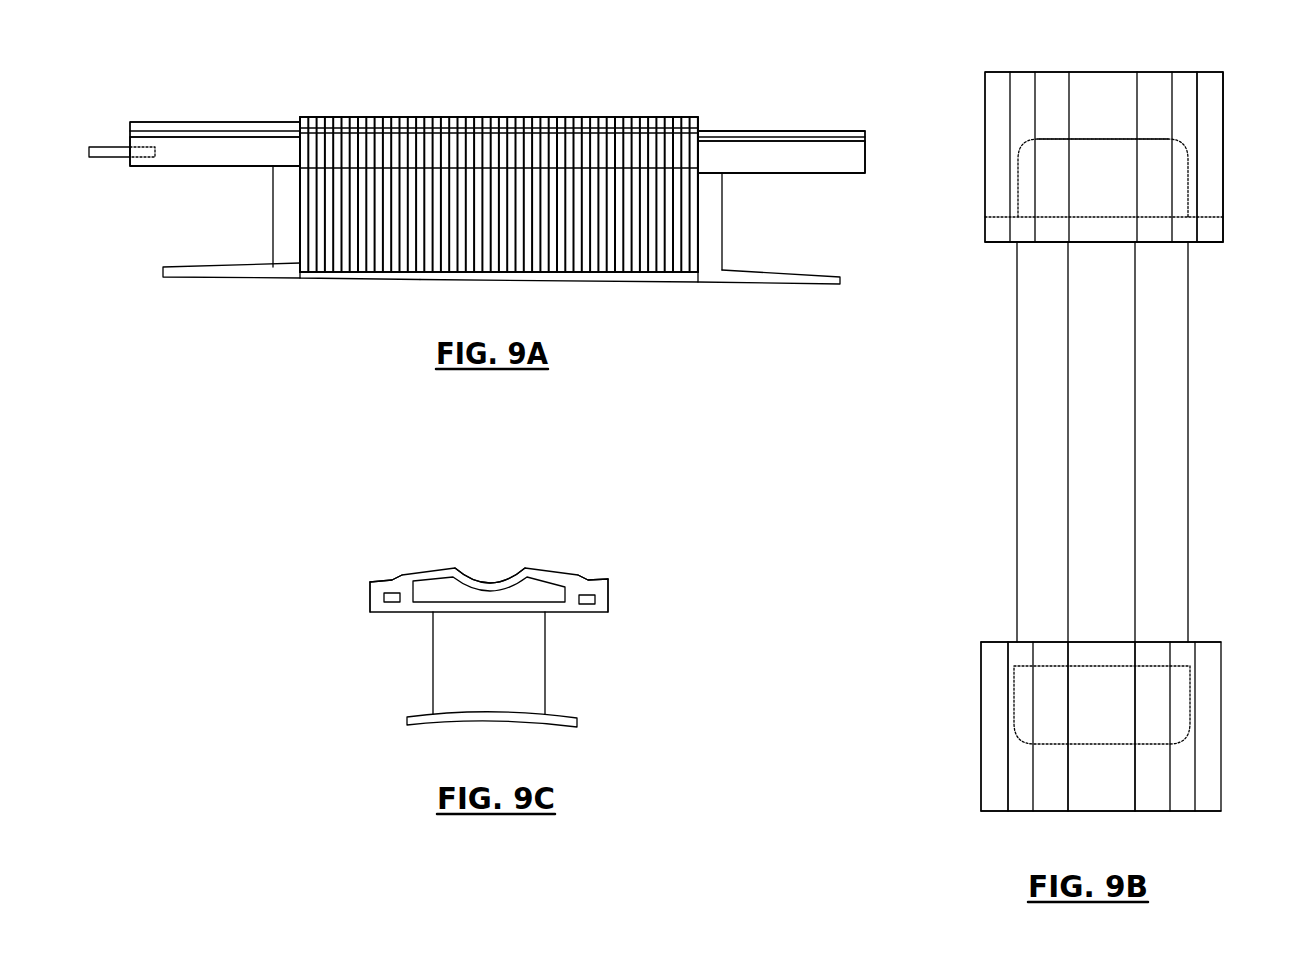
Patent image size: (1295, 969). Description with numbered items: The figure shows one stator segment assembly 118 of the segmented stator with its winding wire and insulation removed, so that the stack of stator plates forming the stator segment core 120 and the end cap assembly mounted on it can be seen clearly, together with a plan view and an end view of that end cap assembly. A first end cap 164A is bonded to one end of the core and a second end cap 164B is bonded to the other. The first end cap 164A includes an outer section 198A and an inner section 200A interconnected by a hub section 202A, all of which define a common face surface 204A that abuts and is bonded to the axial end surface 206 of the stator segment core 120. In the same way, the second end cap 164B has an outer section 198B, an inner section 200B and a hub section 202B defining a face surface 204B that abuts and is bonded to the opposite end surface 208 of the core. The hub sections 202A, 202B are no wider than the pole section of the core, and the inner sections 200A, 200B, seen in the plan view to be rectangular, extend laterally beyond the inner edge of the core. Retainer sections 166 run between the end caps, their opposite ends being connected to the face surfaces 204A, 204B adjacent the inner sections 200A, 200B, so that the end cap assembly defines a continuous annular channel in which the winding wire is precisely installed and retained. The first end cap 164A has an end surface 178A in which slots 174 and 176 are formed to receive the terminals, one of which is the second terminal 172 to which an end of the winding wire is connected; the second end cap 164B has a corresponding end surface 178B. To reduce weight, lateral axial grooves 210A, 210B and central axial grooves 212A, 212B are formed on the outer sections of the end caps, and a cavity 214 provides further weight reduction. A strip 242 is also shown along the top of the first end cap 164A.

In FIG. 9A, the stator segment assembly 118 is at (627, 84).
In FIG. 9A, the stator segment core 120 is at (494, 99).
In FIG. 9A, the first end cap 164A is at (183, 120).
In FIG. 9C, the first end cap 164A is at (577, 526).
In FIG. 9B, the first end cap 164A is at (967, 100).
In FIG. 9A, the second end cap 164B is at (818, 131).
In FIG. 9B, the second end cap 164B is at (951, 770).
In FIG. 9A, the retainer sections 166 is at (432, 272).
In FIG. 9B, the retainer sections 166 is at (1053, 359).
In FIG. 9A, the second terminal 172 is at (105, 158).
In FIG. 9C, the slot 174 is at (390, 603).
In FIG. 9C, the slot 176 is at (590, 607).
In FIG. 9A, the end surface 178A is at (130, 140).
In FIG. 9C, the end surface 178A is at (378, 585).
In FIG. 9B, the end surface 178A is at (1002, 72).
In FIG. 9A, the end surface 178B is at (866, 157).
In FIG. 9B, the end surface 178B is at (1148, 812).
In FIG. 9A, the outer section 198A is at (207, 157).
In FIG. 9C, the outer section 198A is at (597, 588).
In FIG. 9B, the outer section 198A is at (1205, 118).
In FIG. 9A, the outer section 198B is at (836, 166).
In FIG. 9B, the outer section 198B is at (997, 736).
In FIG. 9A, the inner section 200A is at (220, 273).
In FIG. 9C, the inner section 200A is at (437, 718).
In FIG. 9B, the inner section 200A is at (1095, 139).
In FIG. 9A, the inner section 200B is at (755, 268).
In FIG. 9B, the inner section 200B is at (1014, 700).
In FIG. 9A, the hub section 202A is at (282, 218).
In FIG. 9C, the hub section 202A is at (447, 670).
In FIG. 9B, the hub section 202A is at (1075, 237).
In FIG. 9A, the hub section 202B is at (710, 216).
In FIG. 9B, the hub section 202B is at (1073, 652).
In FIG. 9A, the face surface 204A is at (302, 275).
In FIG. 9B, the face surface 204A is at (1200, 244).
In FIG. 9A, the face surface 204B is at (696, 275).
In FIG. 9B, the face surface 204B is at (1197, 641).
In FIG. 9A, the axial end surface 206 is at (298, 178).
In FIG. 9A, the end surface 208 is at (699, 148).
In FIG. 9C, the lateral axial grooves 210A is at (391, 577).
In FIG. 9B, the lateral axial grooves 210A is at (1022, 115).
In FIG. 9B, the lateral axial grooves 210B is at (1011, 787).
In FIG. 9C, the central axial groove 212A is at (487, 583).
In FIG. 9B, the central axial groove 212A is at (1085, 130).
In FIG. 9B, the central axial groove 212B is at (1080, 787).
In FIG. 9C, the cavity 214 is at (438, 577).
In FIG. 9A, the strip 242 is at (245, 122).